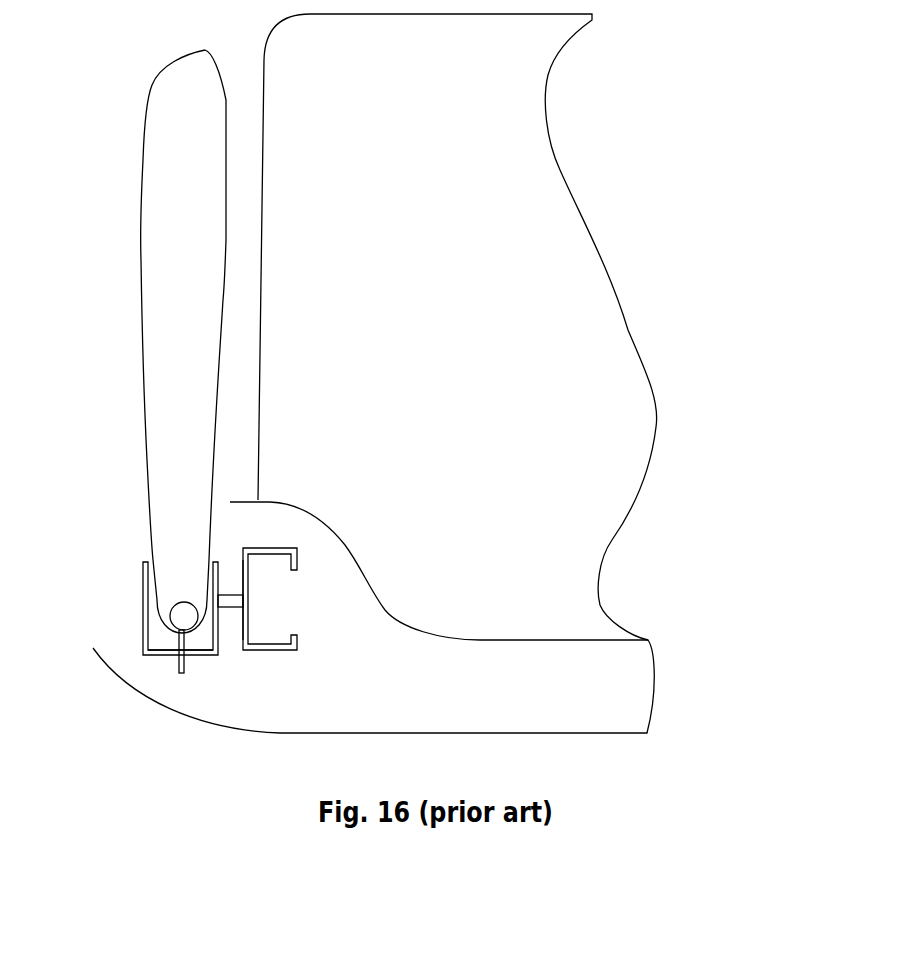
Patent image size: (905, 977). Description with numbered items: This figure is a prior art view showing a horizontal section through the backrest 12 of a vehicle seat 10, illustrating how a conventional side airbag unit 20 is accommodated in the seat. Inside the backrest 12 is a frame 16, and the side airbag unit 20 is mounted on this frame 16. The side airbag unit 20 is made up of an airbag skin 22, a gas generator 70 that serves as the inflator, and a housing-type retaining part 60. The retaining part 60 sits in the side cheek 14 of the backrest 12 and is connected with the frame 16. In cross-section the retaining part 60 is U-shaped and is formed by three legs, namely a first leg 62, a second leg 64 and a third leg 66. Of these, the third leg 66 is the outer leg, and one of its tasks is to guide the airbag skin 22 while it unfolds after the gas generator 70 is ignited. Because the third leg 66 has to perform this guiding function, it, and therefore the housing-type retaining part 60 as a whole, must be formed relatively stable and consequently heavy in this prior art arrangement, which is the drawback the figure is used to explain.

The vehicle seat 10 is at (550, 290).
The backrest 12 is at (568, 690).
The side cheek 14 is at (228, 625).
The frame 16 is at (268, 645).
The side airbag unit 20 is at (165, 440).
The airbag skin 22 is at (142, 222).
The housing-type retaining part 60 is at (205, 652).
The first leg 62 is at (217, 595).
The second leg 64 is at (197, 653).
The third leg 66 is at (142, 622).
The gas generator 70 is at (180, 615).